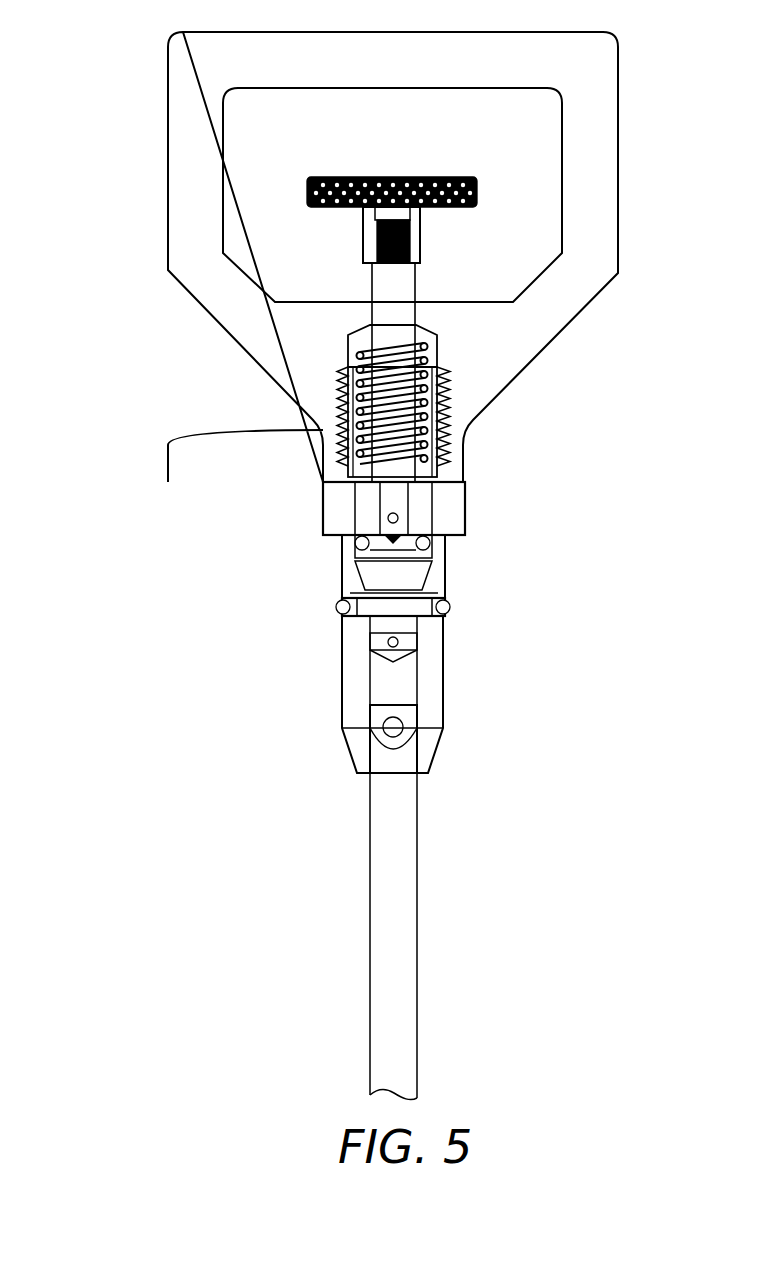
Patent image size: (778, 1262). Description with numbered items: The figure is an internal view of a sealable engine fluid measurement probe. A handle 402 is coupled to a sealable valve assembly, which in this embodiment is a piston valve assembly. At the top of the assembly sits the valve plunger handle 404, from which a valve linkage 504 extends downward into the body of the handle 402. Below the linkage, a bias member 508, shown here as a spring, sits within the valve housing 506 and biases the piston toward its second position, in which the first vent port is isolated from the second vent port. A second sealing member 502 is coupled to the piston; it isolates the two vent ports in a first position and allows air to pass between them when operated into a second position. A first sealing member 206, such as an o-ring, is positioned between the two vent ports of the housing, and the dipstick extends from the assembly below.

The handle 402 is at (176, 35).
The valve plunger handle 404 is at (407, 178).
The valve linkage 504 is at (415, 272).
The valve housing 506 is at (323, 497).
The bias member 508 is at (360, 351).
The second sealing member 502 is at (448, 533).
The first sealing member 206 is at (450, 605).